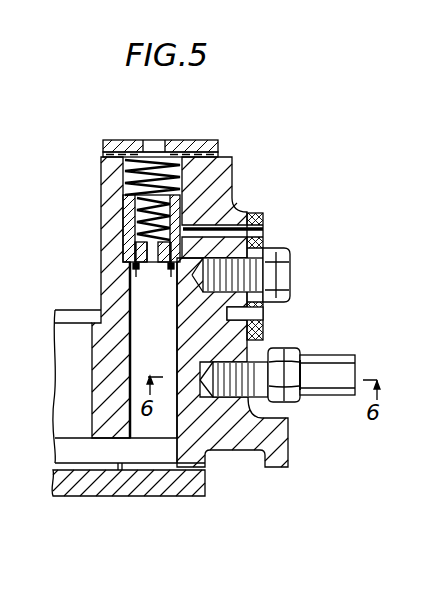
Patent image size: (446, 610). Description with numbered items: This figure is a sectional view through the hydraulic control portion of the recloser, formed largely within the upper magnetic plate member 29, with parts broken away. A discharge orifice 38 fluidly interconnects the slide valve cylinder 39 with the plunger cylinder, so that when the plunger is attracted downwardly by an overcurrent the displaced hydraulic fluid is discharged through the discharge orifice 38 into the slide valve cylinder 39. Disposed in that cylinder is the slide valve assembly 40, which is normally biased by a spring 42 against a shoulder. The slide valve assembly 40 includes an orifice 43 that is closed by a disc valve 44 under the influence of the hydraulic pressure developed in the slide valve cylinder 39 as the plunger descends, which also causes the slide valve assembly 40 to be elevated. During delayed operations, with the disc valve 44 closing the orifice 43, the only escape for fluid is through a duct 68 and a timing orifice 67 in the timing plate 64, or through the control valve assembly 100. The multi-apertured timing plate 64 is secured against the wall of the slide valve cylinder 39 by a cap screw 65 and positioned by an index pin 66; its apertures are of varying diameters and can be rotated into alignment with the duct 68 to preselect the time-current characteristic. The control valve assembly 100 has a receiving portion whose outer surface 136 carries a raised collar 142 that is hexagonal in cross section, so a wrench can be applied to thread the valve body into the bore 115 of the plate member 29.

The upper magnetic plate member 29 is at (0, 574).
The discharge orifice 38 is at (150, 452).
The slide valve cylinder 39 is at (165, 349).
The slide valve assembly 40 is at (124, 224).
The spring 42 is at (135, 168).
The orifice 43 is at (122, 252).
The disc valve 44 is at (157, 277).
The timing plate 64 is at (262, 213).
The cap screw 65 is at (283, 272).
The index pin 66 is at (263, 310).
The timing orifice 67 is at (265, 238).
The duct 68 is at (228, 218).
The control valve assembly 100 is at (310, 405).
The bore 115 is at (198, 383).
The outer surface 136 is at (332, 405).
The raised collar 142 is at (287, 348).